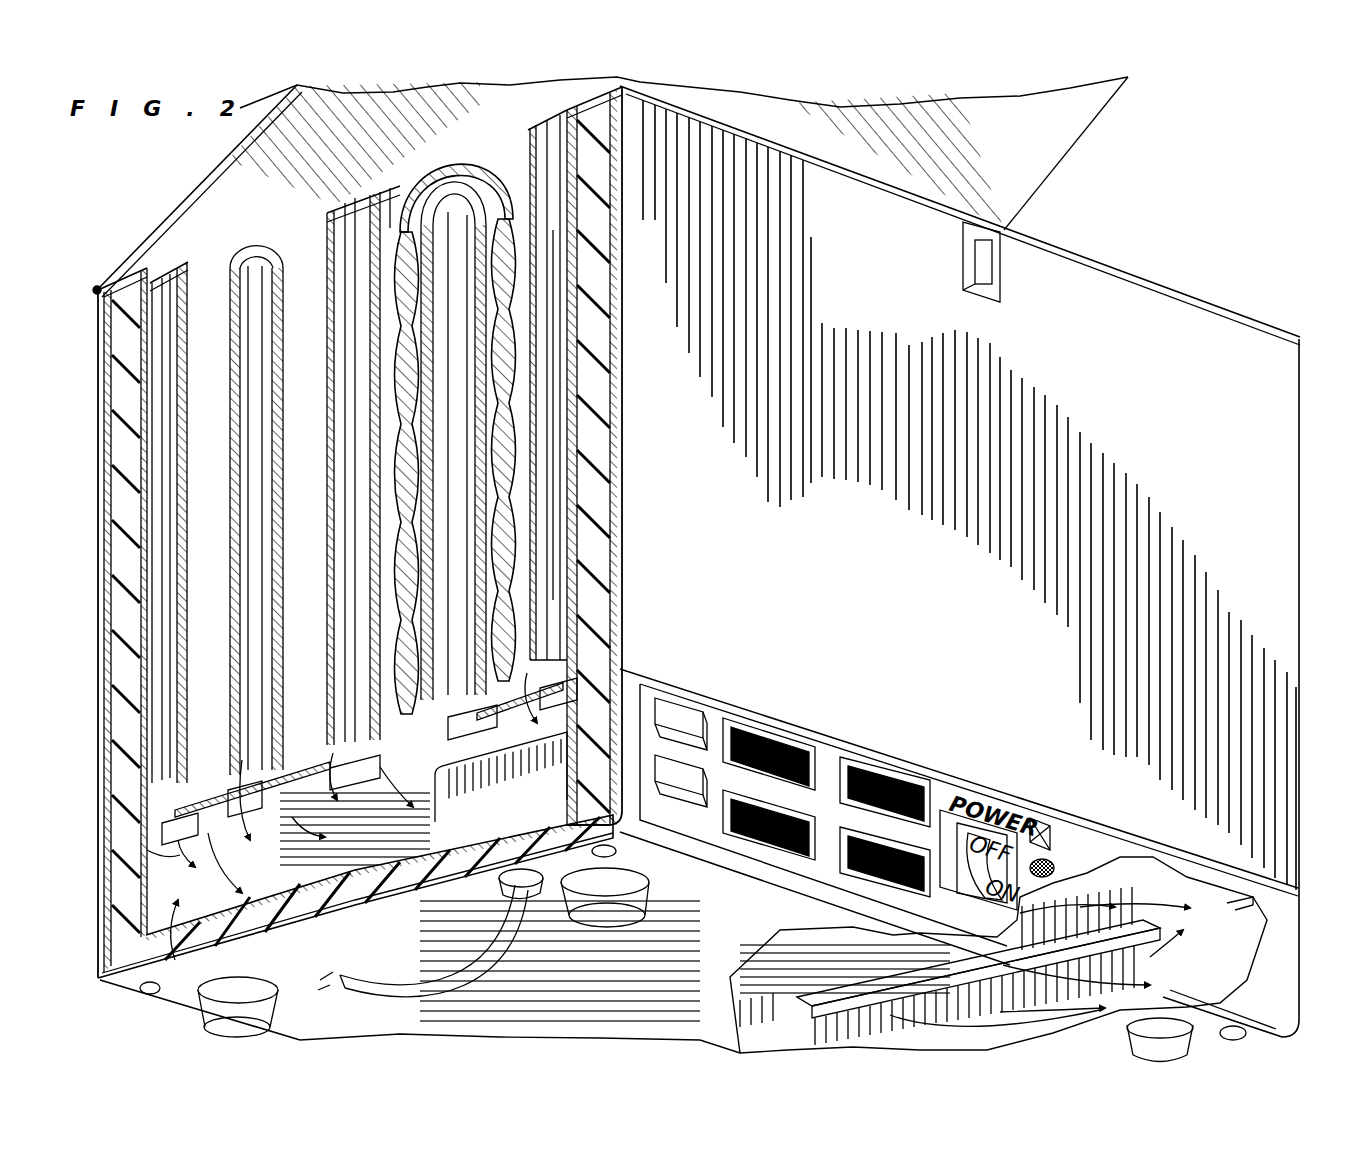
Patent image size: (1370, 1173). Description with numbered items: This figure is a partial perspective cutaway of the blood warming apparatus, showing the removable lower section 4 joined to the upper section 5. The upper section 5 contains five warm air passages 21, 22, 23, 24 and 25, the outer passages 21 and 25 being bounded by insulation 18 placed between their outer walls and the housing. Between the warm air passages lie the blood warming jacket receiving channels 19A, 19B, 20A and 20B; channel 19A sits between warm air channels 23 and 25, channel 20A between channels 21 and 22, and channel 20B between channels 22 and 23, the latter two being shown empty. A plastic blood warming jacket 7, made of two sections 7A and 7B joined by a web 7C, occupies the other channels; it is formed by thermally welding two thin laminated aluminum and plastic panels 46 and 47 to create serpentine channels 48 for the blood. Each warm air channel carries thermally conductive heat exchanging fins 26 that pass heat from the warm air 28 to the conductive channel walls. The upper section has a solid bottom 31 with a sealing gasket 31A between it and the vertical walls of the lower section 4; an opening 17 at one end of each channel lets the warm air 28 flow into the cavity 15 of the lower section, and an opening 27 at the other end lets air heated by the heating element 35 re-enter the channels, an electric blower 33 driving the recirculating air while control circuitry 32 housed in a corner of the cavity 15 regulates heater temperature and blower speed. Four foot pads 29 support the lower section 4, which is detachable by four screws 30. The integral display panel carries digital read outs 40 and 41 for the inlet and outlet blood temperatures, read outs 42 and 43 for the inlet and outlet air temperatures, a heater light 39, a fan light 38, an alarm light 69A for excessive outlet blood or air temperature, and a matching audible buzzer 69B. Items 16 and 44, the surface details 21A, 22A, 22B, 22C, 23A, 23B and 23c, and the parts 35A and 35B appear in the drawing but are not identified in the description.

The lower section 4 is at (1117, 845).
The upper section 5 is at (682, 472).
The blood warming jacket 7 is at (448, 420).
The jacket section 7A is at (378, 370).
The jacket section 7B is at (522, 342).
The web 7C is at (462, 170).
The cavity 15 is at (170, 955).
The air flow path 16 is at (242, 876).
The opening 17 is at (395, 760).
The insulation 18 is at (612, 272).
The blood warming jacket receiving channel 19A is at (395, 212).
The blood warming jacket receiving channel 19B is at (512, 150).
The blood warming jacket channel 20A is at (214, 278).
The blood warming jacket channel 20B is at (322, 268).
The warm air passage 21 is at (170, 272).
The plate surface 21A is at (172, 385).
The warm air passage 22 is at (261, 515).
The plate side 22A is at (240, 330).
The plate side 22B is at (278, 355).
The plate rounded top 22C is at (262, 255).
The warm air passage 23 is at (342, 590).
The plate side 23A is at (365, 455).
The plate side 23B is at (382, 472).
The plate top 23c is at (365, 182).
The warm air passage 24 is at (455, 170).
The warm air passage 25 is at (550, 125).
The heat exchanging fins 26 is at (556, 232).
The opening 27 is at (1197, 930).
The warm air 28 is at (1060, 1022).
The foot pads 29 is at (200, 1023).
The screws 30 is at (624, 652).
The bottom 31 is at (215, 812).
The sealing gasket 31A is at (178, 856).
The control circuitry 32 is at (480, 822).
The electric blower 33 is at (352, 862).
The heating element 35 is at (967, 961).
The grille fins lower 35A is at (945, 1012).
The grille fins upper 35B is at (1185, 905).
The fan light 38 is at (688, 798).
The heater light 39 is at (680, 705).
The digital read out 40 is at (782, 740).
The digital read out 41 is at (760, 835).
The digital readout 42 is at (900, 785).
The digital read out 43 is at (870, 873).
The mounting boss 44 is at (968, 292).
The panel 46 is at (512, 466).
The panel 47 is at (520, 522).
The serpentine channels 48 is at (395, 522).
The alarm light 69A is at (1040, 818).
The audible buzzer 69B is at (1056, 866).